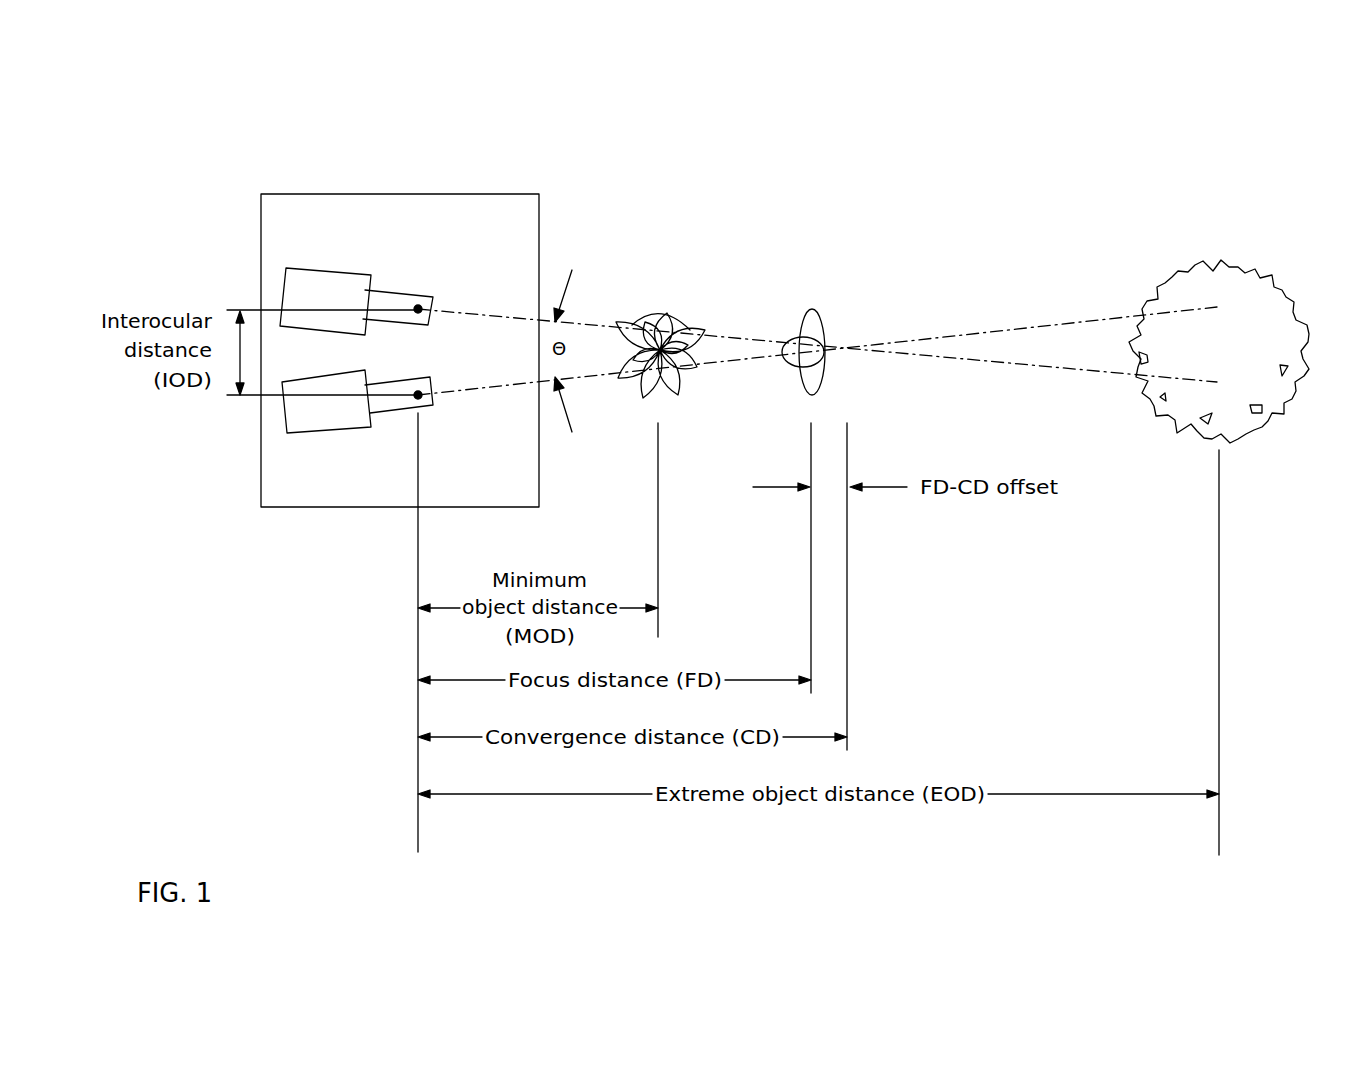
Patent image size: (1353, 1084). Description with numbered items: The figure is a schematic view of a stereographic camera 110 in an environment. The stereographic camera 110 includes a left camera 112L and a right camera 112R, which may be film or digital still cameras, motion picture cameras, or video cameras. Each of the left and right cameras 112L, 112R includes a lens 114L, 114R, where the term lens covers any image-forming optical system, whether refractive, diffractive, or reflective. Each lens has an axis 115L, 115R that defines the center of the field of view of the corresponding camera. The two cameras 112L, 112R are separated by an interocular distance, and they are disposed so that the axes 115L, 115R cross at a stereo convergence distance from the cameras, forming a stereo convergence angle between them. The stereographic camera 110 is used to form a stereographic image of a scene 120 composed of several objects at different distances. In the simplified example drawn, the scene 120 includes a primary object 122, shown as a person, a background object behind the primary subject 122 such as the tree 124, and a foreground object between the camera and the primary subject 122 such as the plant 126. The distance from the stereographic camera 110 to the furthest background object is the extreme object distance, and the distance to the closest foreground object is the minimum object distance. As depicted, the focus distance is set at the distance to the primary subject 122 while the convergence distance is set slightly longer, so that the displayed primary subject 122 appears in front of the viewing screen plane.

The stereographic camera 110 is at (400, 350).
The left camera 112L is at (327, 268).
The right camera 112R is at (347, 430).
The lens 114L is at (397, 292).
The lens 114R is at (430, 407).
The axis 115L is at (980, 363).
The axis 115R is at (970, 338).
The scene 120 is at (606, 143).
The primary object 122 is at (817, 317).
The tree 124 is at (1223, 268).
The plant 126 is at (673, 327).